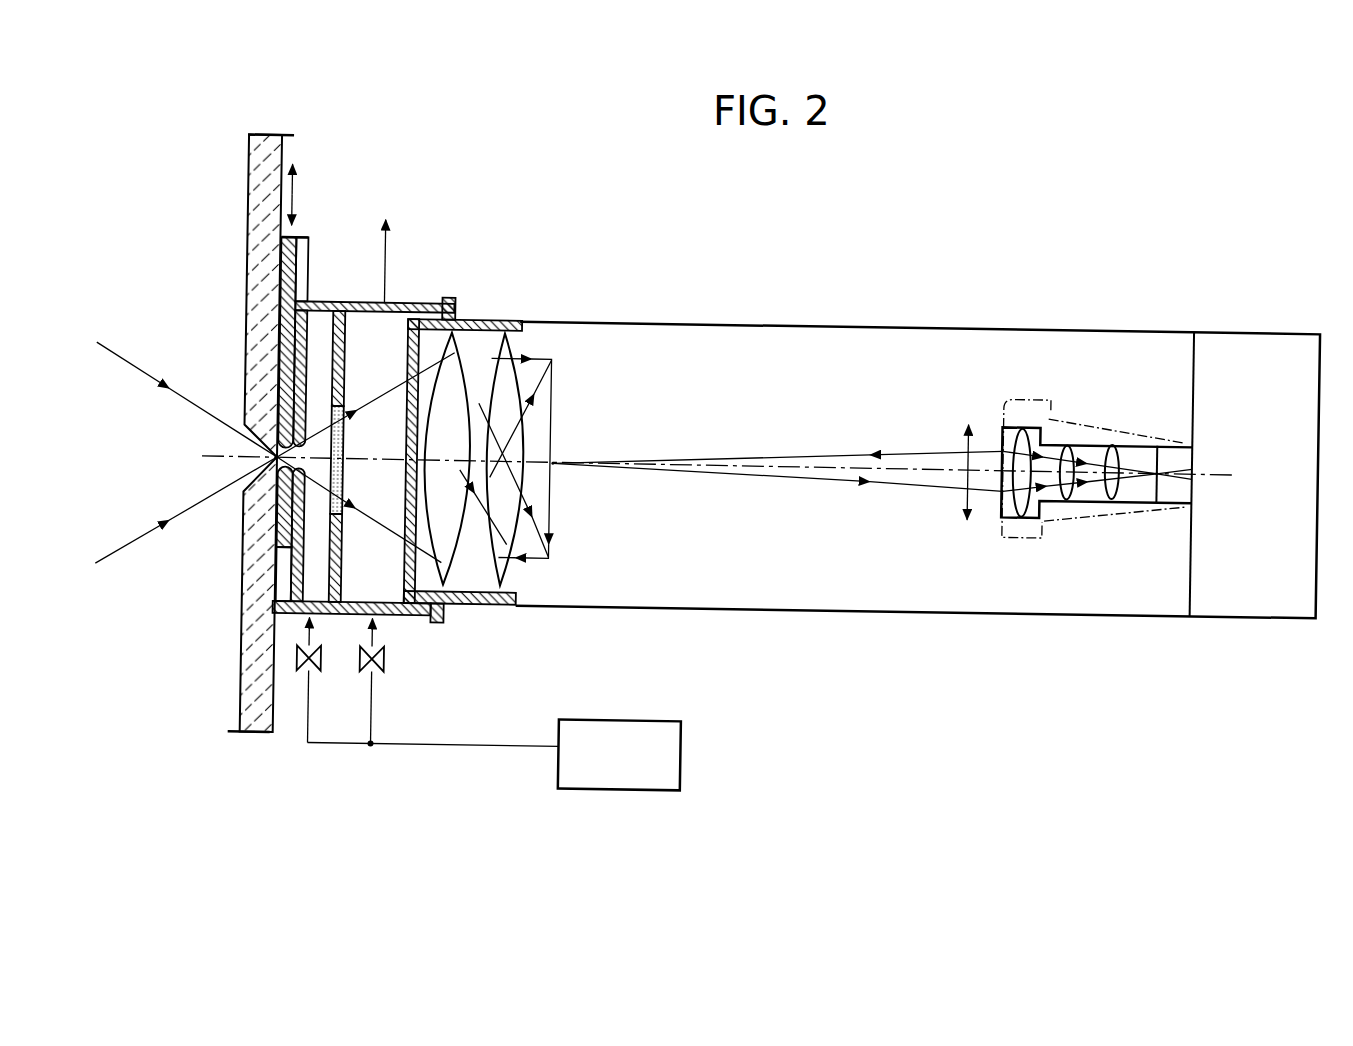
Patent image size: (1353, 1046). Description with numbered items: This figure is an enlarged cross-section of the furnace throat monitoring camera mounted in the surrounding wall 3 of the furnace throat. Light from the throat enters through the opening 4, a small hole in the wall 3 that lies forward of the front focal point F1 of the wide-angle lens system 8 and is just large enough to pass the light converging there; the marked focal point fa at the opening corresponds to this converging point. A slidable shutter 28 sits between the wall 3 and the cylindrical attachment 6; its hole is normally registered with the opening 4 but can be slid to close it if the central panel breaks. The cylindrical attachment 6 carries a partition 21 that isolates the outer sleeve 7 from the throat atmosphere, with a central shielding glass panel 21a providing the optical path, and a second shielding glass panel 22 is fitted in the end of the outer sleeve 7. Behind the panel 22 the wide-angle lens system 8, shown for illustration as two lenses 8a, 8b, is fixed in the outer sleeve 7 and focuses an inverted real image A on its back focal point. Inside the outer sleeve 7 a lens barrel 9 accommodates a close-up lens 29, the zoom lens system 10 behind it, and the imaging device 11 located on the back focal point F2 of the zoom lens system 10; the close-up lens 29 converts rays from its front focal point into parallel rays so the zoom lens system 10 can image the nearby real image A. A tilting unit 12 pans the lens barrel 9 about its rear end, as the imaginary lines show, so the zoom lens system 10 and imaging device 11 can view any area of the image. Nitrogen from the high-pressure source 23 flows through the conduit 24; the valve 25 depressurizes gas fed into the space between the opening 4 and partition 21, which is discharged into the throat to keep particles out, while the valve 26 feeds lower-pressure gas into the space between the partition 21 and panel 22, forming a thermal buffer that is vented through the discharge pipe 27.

The surrounding wall 3 is at (248, 204).
The opening 4 is at (233, 448).
The cylindrical attachment 6 is at (420, 615).
The outer sleeve 7 is at (480, 603).
The wide-angle lens system 8 is at (509, 408).
The lens 8a is at (453, 394).
The lens 8b is at (500, 530).
The lens barrel 9 is at (1087, 492).
The zoom lens system 10 is at (1097, 428).
The imaging device 11 is at (1172, 487).
The tilting unit 12 is at (1263, 565).
The partition 21 is at (366, 432).
The central shielding glass panel 21a is at (338, 495).
The shielding glass panel 22 is at (410, 368).
The high-pressure nitrogen gas source 23 is at (657, 760).
The conduit 24 is at (438, 748).
The valve 25 is at (320, 662).
The valve 26 is at (384, 662).
The discharge pipe 27 is at (386, 258).
The slidable shutter 28 is at (295, 262).
The close-up lens 29 is at (872, 456).
The focal point fa is at (265, 474).
The inverted real image A is at (548, 497).
The front focal point F1 is at (553, 459).
The back focal point F2 is at (1158, 460).